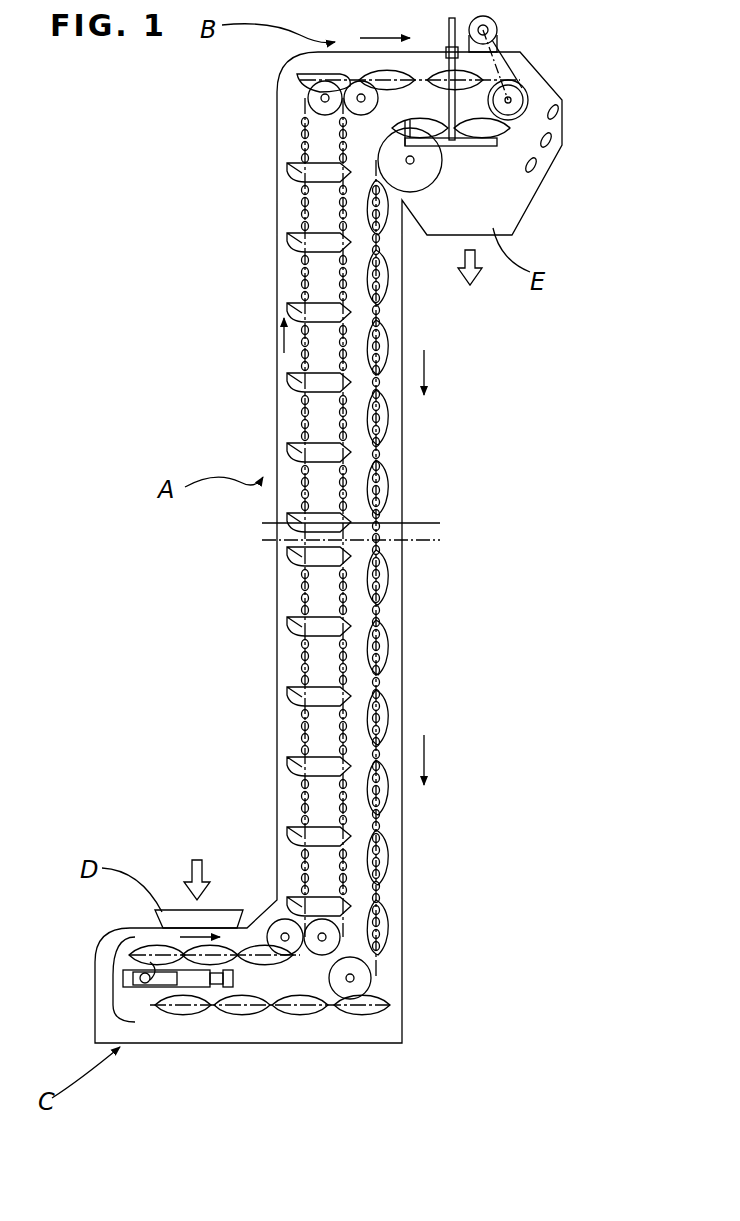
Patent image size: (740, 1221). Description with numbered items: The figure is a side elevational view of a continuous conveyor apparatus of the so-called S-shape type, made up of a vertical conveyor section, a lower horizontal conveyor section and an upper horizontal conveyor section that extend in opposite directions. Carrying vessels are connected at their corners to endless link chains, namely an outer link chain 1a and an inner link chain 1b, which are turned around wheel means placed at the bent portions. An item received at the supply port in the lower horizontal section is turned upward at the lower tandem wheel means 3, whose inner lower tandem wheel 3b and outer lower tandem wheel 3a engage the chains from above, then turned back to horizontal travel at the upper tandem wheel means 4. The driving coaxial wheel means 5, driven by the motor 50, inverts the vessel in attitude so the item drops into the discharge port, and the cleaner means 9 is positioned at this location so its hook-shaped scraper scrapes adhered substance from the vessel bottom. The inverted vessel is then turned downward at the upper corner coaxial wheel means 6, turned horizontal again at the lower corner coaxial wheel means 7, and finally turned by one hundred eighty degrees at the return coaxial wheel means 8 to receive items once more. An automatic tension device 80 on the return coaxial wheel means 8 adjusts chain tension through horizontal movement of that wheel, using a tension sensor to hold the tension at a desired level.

The outer link chain 1a is at (302, 653).
The inner link chain 1b is at (343, 653).
The lower tandem wheel means 3 is at (268, 890).
The outer lower tandem wheel 3a is at (276, 930).
The inner lower tandem wheel 3b is at (333, 935).
The upper tandem wheel means 4 is at (300, 101).
The driving coaxial wheel means 5 is at (544, 97).
The upper corner coaxial wheel means 6 is at (423, 183).
The lower corner coaxial wheel means 7 is at (365, 988).
The return coaxial wheel means 8 is at (137, 1000).
The cleaner means 9 is at (480, 147).
The motor 50 is at (497, 26).
The automatic tension device 80 is at (152, 966).